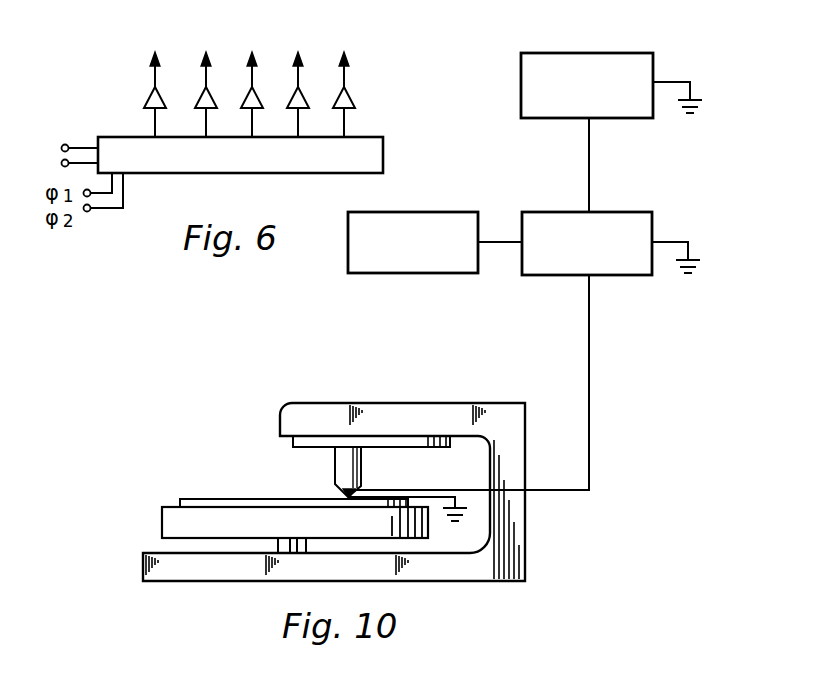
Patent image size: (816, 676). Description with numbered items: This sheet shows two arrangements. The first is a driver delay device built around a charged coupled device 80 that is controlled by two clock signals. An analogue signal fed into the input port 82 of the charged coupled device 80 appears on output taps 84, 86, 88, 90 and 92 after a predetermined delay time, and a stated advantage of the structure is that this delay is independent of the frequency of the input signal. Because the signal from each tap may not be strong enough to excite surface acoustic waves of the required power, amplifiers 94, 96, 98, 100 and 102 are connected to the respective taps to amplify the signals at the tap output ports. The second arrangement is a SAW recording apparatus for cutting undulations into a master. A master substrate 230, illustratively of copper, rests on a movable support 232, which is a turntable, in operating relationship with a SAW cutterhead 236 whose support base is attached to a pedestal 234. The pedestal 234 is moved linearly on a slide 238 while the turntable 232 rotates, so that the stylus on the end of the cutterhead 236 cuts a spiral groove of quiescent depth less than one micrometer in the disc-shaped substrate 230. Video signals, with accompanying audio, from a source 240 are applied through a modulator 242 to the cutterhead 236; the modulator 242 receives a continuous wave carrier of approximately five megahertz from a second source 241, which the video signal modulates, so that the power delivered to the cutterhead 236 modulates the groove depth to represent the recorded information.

In FIG. 6, the charged coupled device 80 is at (383, 163).
In FIG. 6, the input port 82 is at (62, 154).
In FIG. 6, the output tap 84 is at (157, 56).
In FIG. 6, the output tap 86 is at (208, 56).
In FIG. 6, the output tap 88 is at (254, 56).
In FIG. 6, the output tap 90 is at (300, 56).
In FIG. 6, the output tap 92 is at (346, 56).
In FIG. 6, the amplifier 94 is at (151, 100).
In FIG. 6, the amplifier 96 is at (200, 100).
In FIG. 6, the amplifier 98 is at (247, 100).
In FIG. 6, the amplifier 100 is at (294, 100).
In FIG. 6, the amplifier 102 is at (348, 100).
In FIG. 10, the source 240 is at (653, 57).
In FIG. 10, the source 241 is at (452, 272).
In FIG. 10, the modulator 242 is at (652, 215).
In FIG. 10, the master substrate 230 is at (213, 487).
In FIG. 10, the movable support 232 is at (162, 525).
In FIG. 10, the pedestal 234 is at (335, 472).
In FIG. 10, the SAW cutterhead 236 is at (364, 482).
In FIG. 10, the slide 238 is at (422, 450).